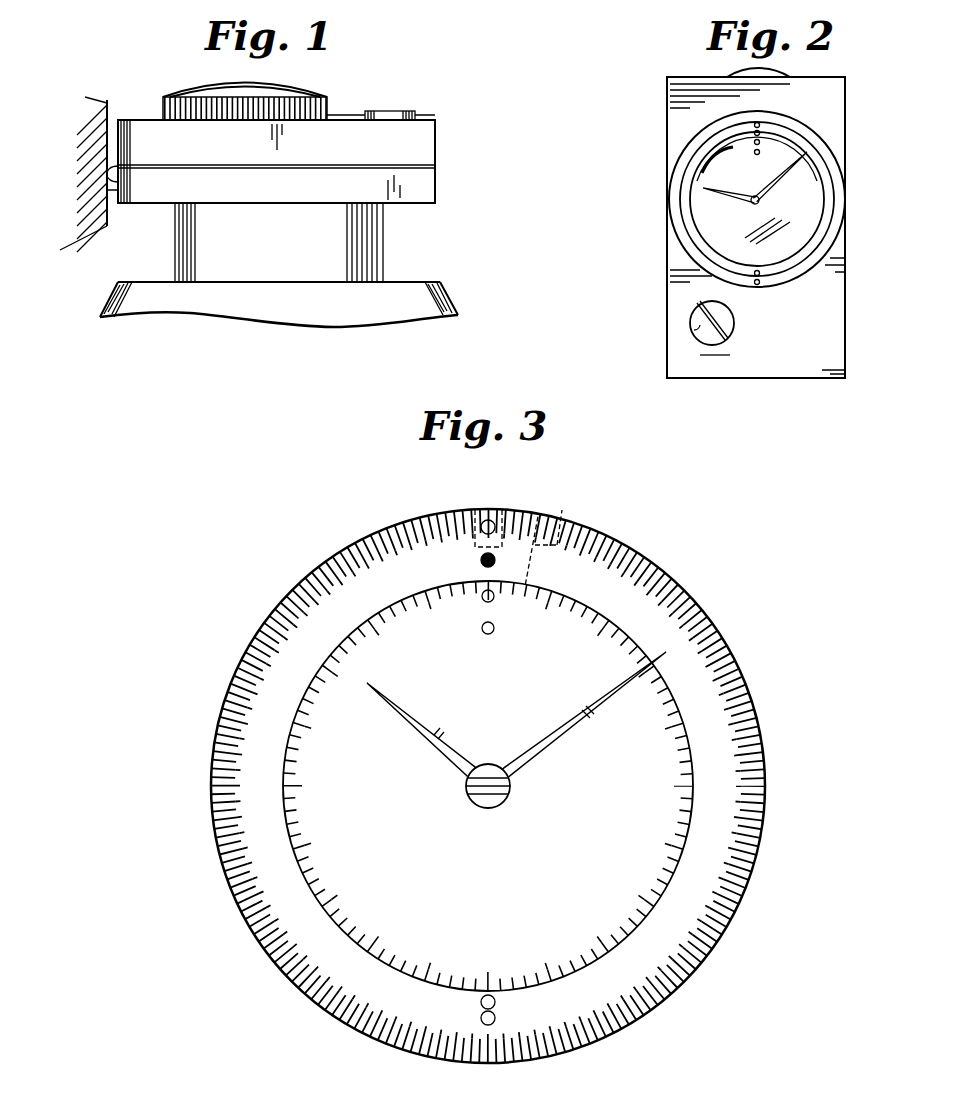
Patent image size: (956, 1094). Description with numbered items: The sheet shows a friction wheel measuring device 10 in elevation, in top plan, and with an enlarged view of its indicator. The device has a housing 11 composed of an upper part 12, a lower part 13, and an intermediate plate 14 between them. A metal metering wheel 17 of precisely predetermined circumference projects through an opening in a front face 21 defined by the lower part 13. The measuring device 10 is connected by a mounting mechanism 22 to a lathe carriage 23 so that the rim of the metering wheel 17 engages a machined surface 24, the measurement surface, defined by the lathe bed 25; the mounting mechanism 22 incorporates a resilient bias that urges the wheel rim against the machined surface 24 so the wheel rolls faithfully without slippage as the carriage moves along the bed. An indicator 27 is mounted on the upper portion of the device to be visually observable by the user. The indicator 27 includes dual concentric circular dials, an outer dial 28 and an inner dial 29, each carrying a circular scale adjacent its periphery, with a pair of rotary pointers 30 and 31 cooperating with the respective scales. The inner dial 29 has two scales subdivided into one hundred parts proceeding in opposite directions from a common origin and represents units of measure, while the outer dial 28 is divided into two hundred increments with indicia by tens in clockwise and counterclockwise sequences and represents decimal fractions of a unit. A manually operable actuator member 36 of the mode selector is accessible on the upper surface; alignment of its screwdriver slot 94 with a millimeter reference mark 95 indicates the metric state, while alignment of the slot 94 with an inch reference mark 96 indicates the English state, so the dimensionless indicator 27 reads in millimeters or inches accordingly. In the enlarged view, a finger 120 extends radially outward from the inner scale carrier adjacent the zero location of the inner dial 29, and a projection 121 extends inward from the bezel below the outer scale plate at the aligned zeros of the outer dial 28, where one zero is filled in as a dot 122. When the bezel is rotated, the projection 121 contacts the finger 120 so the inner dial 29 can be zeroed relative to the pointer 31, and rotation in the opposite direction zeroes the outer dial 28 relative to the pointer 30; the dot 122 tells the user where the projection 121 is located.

In FIG. 1, the friction wheel measuring device 10 is at (308, 190).
In FIG. 1, the housing 11 is at (440, 128).
In FIG. 1, the upper part 12 is at (423, 145).
In FIG. 1, the lower part 13 is at (423, 193).
In FIG. 1, the intermediate plate 14 is at (418, 167).
In FIG. 1, the metering wheel 17 is at (100, 173).
In FIG. 2, the metering wheel 17 is at (780, 72).
In FIG. 1, the front face 21 is at (118, 198).
In FIG. 2, the front face 21 is at (830, 78).
In FIG. 1, the mounting mechanism 22 is at (363, 248).
In FIG. 1, the lathe carriage 23 is at (445, 302).
In FIG. 1, the machined surface 24 is at (110, 108).
In FIG. 1, the lathe bed 25 is at (83, 233).
In FIG. 1, the indicator 27 is at (357, 60).
In FIG. 2, the indicator 27 is at (824, 129).
In FIG. 3, the indicator 27 is at (240, 616).
In FIG. 2, the outer dial 28 is at (830, 210).
In FIG. 2, the inner dial 29 is at (797, 240).
In FIG. 3, the inner dial 29 is at (622, 660).
In FIG. 2, the rotary pointer 30 is at (792, 178).
In FIG. 2, the rotary pointer 31 is at (700, 197).
In FIG. 1, the actuator member 36 is at (385, 113).
In FIG. 2, the actuator member 36 is at (697, 333).
In FIG. 2, the screwdriver slot 94 is at (716, 321).
In FIG. 2, the millimeter reference mark 95 is at (698, 300).
In FIG. 2, the inch reference mark 96 is at (700, 355).
In FIG. 3, the finger 120 is at (588, 523).
In FIG. 3, the projection 121 is at (458, 510).
In FIG. 3, the dot 122 is at (495, 557).